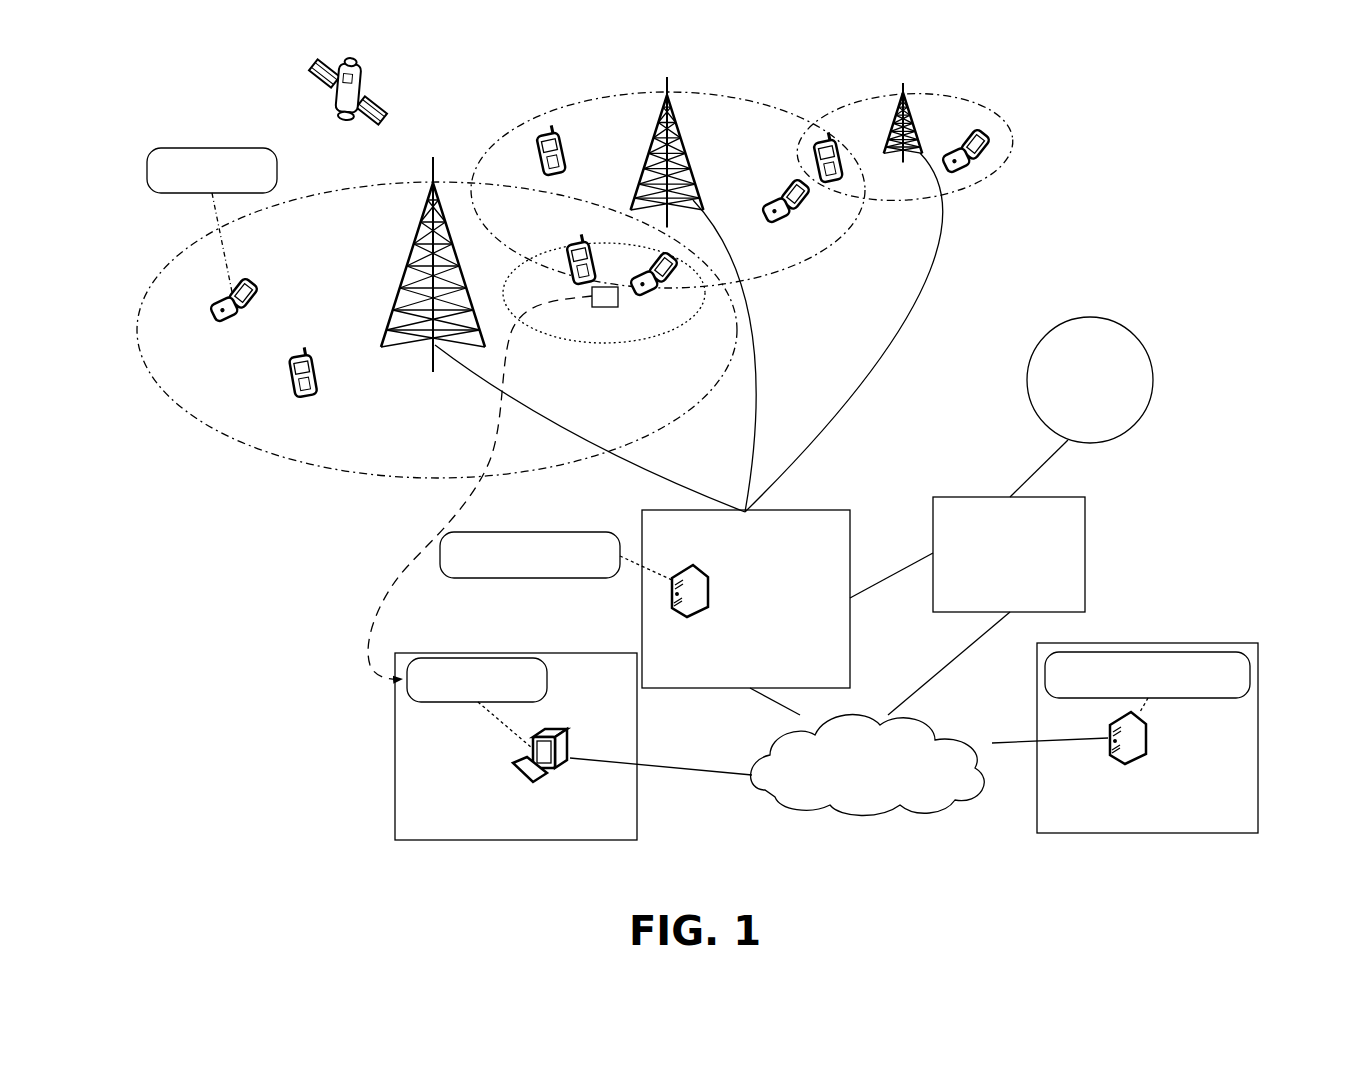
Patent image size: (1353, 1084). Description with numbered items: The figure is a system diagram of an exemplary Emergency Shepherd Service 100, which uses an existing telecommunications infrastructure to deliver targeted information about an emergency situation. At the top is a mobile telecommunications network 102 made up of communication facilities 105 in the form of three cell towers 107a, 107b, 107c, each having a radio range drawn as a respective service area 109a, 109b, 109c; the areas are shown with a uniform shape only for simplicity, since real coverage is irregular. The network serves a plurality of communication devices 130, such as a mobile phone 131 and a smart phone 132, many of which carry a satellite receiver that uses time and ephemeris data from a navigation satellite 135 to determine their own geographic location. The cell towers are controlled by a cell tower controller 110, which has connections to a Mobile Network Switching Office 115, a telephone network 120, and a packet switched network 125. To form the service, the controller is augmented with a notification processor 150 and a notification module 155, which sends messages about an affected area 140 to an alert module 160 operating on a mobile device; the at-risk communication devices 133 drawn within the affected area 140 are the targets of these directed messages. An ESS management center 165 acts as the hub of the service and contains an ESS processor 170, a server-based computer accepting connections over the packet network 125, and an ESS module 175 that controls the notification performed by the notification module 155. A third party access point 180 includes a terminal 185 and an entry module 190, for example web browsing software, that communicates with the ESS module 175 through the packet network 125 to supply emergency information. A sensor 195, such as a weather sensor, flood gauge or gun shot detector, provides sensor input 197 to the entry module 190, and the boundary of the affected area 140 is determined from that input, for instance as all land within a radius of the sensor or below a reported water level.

The Emergency Shepherd Service 100 is at (260, 745).
The mobile telecommunications network 102 is at (1053, 273).
The communication facilities 105 is at (653, 241).
The cell tower 107a is at (413, 264).
The cell tower 107b is at (660, 124).
The cell tower 107c is at (893, 120).
The service area 109a is at (308, 466).
The service area 109b is at (790, 270).
The service area 109c is at (980, 110).
The cell tower controller 110 is at (645, 599).
The Mobile Network Switching Office 115 is at (1009, 554).
The telephone network 120 is at (1090, 380).
The packet switched network 125 is at (868, 765).
The communication devices 130 is at (250, 339).
The mobile phone 131 is at (250, 303).
The smart phone 132 is at (317, 372).
The mobile devices in affected area 133 is at (587, 242).
The satellite 135 is at (348, 104).
The affected area 140 is at (532, 333).
The notification processor 150 is at (690, 626).
The notification module 155 is at (556, 556).
The alert module 160 is at (212, 220).
The ESS management center 165 is at (1147, 761).
The ESS processor 170 is at (1128, 763).
The ESS module 175 is at (1147, 682).
The third party access point 180 is at (516, 770).
The terminal 185 is at (540, 779).
The entry module 190 is at (477, 703).
The sensor 195 is at (608, 307).
The sensor input 197 is at (380, 598).